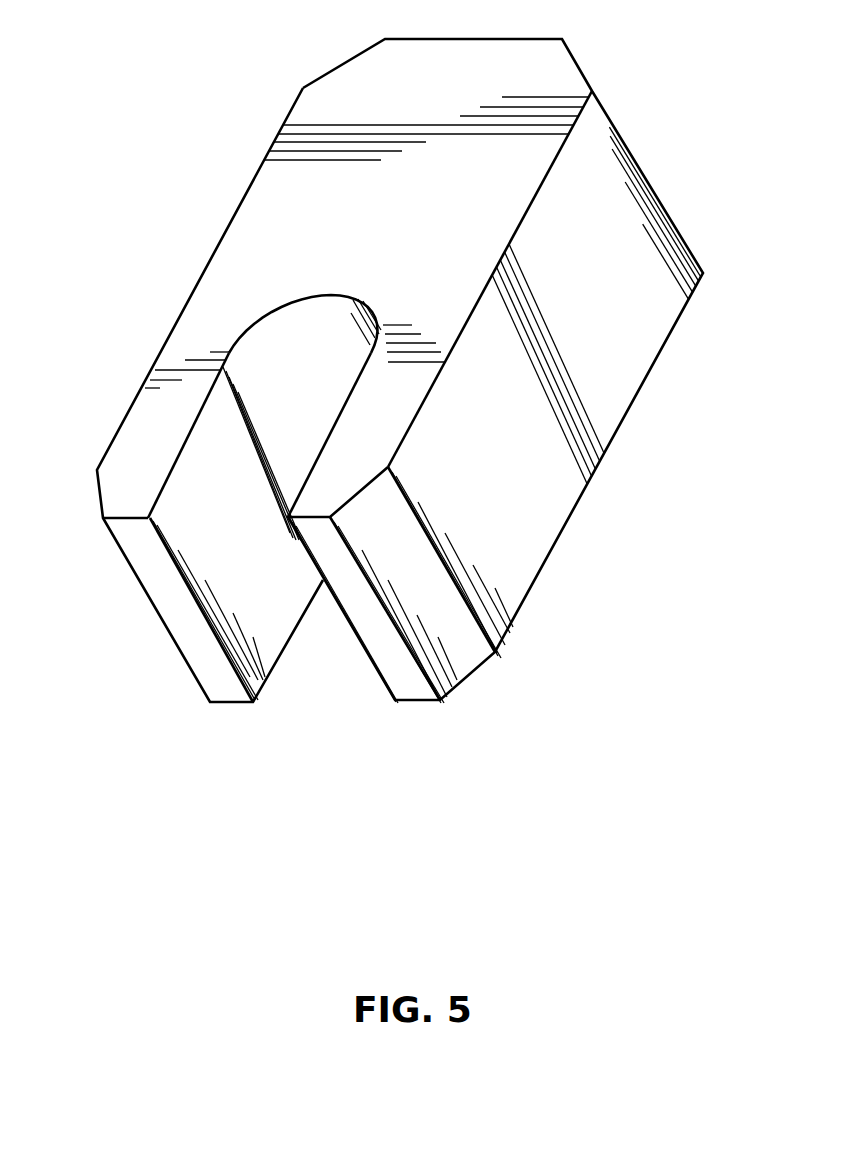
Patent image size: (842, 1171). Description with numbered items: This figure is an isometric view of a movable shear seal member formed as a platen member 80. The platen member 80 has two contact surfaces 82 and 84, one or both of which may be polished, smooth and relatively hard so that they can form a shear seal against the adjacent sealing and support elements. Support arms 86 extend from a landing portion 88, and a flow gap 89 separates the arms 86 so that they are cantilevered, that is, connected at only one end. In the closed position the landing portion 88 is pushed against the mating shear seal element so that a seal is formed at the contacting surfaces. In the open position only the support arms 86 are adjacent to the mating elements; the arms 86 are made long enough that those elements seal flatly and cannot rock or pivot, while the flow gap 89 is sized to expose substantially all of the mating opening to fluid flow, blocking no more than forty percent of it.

The platen member 80 is at (573, 686).
The contact surface 82 is at (672, 328).
The contact surface 84 is at (272, 190).
The support arms 86 is at (378, 429).
The landing portion 88 is at (358, 80).
The flow gap 89 is at (263, 640).